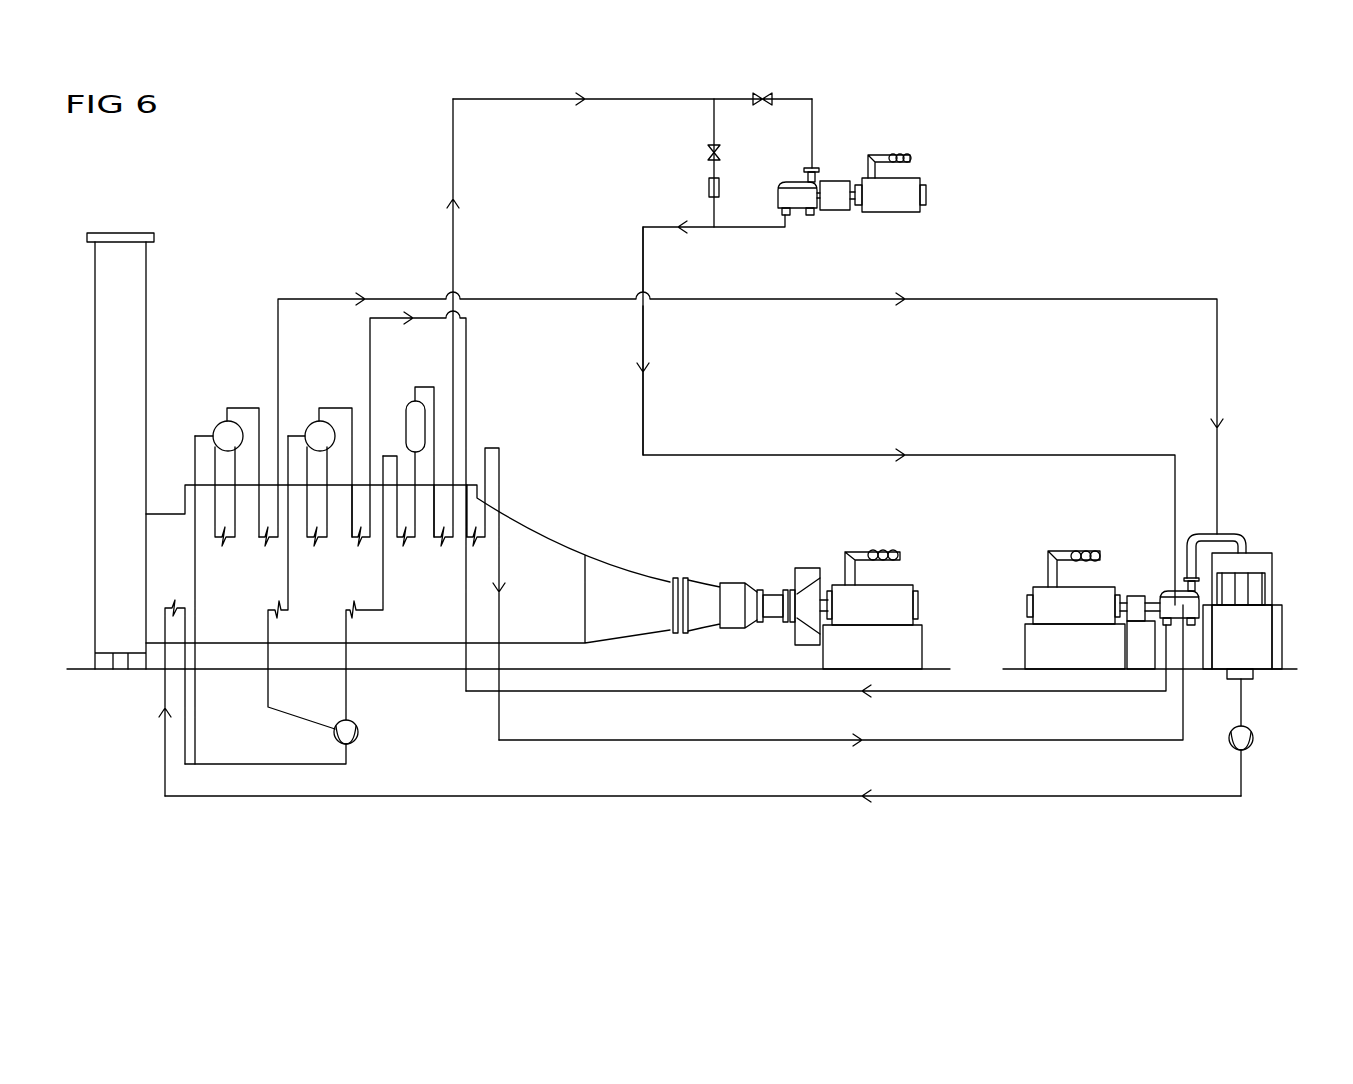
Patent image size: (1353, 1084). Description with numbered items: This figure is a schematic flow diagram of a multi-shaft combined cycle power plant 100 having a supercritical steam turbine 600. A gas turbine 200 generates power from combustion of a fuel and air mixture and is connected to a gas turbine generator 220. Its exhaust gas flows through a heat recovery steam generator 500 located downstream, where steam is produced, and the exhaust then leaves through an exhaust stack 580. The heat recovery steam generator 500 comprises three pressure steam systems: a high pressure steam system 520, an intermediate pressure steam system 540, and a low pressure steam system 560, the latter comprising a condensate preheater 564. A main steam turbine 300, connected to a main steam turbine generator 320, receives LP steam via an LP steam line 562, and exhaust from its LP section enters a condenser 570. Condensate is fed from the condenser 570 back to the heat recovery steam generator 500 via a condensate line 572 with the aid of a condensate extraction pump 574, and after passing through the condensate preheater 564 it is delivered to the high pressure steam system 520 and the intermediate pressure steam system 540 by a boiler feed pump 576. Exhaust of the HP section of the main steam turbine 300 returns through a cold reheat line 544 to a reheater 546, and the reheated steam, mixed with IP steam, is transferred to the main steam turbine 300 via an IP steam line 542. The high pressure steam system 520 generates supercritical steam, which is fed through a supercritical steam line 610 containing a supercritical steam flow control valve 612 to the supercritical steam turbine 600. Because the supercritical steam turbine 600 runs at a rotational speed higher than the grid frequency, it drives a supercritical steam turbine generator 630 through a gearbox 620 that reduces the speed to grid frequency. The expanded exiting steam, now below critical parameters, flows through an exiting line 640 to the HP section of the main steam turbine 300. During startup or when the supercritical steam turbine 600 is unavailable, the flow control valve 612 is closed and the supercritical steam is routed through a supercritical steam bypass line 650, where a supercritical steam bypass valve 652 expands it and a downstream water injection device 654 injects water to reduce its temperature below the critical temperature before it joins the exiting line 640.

The combined cycle power plant 100 is at (1126, 101).
The gas turbine 200 is at (733, 583).
The gas turbine generator 220 is at (905, 585).
The main steam turbine 300 is at (1232, 530).
The main steam turbine generator 320 is at (1107, 585).
The heat recovery steam generator 500 is at (318, 246).
The high pressure steam system 520 is at (411, 386).
The intermediate pressure steam system 540 is at (326, 393).
The IP steam line 542 is at (1031, 740).
The cold reheat line 544 is at (1031, 691).
The reheater 546 is at (498, 448).
The low pressure steam system 560 is at (231, 393).
The LP steam line 562 is at (1050, 299).
The condensate preheater 564 is at (175, 600).
The condenser 570 is at (1275, 632).
The condensate line 572 is at (1031, 796).
The condensate extraction pump 574 is at (1253, 738).
The boiler feed pump 576 is at (360, 735).
The exhaust stack 580 is at (146, 283).
The supercritical steam turbine 600 is at (798, 210).
The supercritical steam line 610 is at (453, 155).
The supercritical steam flow control valve 612 is at (764, 93).
The gearbox 620 is at (834, 181).
The supercritical steam turbine generator 630 is at (925, 195).
The exiting line 640 is at (643, 342).
The supercritical steam bypass line 650 is at (714, 128).
The supercritical steam bypass valve 652 is at (708, 152).
The water injection device 654 is at (709, 189).